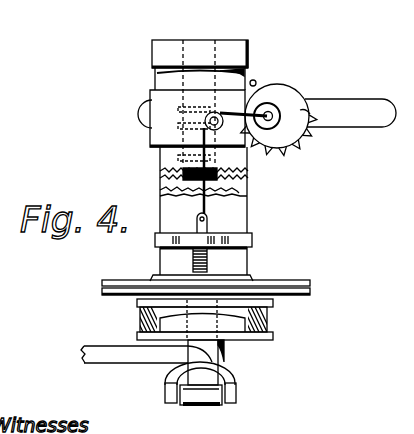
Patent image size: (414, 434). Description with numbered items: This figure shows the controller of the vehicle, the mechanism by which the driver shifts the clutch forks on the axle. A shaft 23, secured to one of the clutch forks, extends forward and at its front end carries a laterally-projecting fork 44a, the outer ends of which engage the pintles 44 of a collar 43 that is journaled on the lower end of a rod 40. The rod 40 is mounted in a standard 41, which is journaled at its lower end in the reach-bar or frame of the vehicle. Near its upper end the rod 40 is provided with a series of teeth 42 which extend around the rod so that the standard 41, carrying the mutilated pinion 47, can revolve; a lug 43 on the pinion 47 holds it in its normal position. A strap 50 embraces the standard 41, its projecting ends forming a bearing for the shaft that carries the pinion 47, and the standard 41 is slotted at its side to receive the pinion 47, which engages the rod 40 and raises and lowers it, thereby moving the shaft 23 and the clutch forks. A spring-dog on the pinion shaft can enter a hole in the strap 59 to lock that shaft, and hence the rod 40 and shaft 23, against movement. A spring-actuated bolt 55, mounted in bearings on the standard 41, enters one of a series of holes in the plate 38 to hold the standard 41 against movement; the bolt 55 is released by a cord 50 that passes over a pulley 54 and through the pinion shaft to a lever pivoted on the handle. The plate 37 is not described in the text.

The shaft 23 is at (143, 358).
The plate 37 is at (311, 283).
The plate 38 is at (273, 303).
The rod 40 is at (218, 188).
The standard 41 is at (240, 223).
The teeth 42 is at (178, 143).
The collar 43 is at (256, 82).
The pintles 44 is at (181, 404).
The laterally-projecting fork 44a is at (237, 379).
The mutilated pinion 47 is at (310, 112).
The strap 50 is at (200, 209).
The pulley 54 is at (223, 124).
The spring-actuated bolt 55 is at (210, 255).
The strap 59 is at (262, 113).